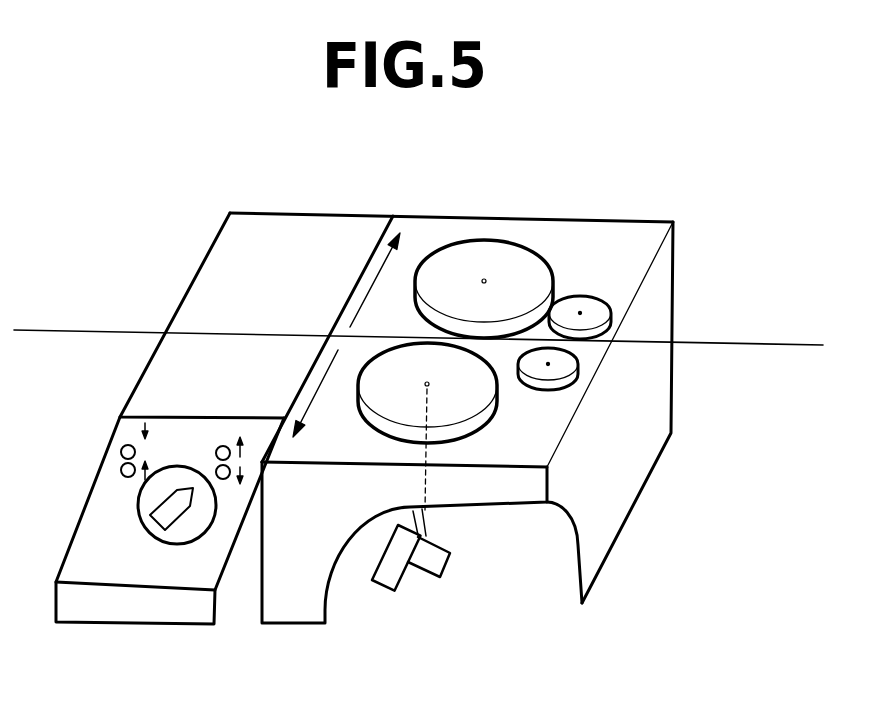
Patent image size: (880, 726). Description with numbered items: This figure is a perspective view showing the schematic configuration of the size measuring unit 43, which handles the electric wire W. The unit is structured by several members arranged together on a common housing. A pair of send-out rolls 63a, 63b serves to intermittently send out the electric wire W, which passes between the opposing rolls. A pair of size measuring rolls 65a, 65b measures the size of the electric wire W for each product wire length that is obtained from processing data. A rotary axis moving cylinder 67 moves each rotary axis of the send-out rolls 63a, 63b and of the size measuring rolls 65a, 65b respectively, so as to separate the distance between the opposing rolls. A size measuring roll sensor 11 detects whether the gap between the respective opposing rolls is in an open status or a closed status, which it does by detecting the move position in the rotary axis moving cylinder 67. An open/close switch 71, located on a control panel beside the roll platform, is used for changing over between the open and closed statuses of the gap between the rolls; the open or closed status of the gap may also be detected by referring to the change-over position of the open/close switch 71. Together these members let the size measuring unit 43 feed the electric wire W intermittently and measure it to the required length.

The size measuring unit 43 is at (618, 188).
The send-out roll 63a is at (483, 253).
The send-out roll 63b is at (455, 409).
The size measuring roll 65a is at (598, 297).
The size measuring roll 65b is at (580, 357).
The open/close switch 71 is at (137, 507).
The rotary axis moving cylinder 67 is at (387, 578).
The size measuring roll sensor 11 is at (432, 565).
The electric wire W is at (738, 344).